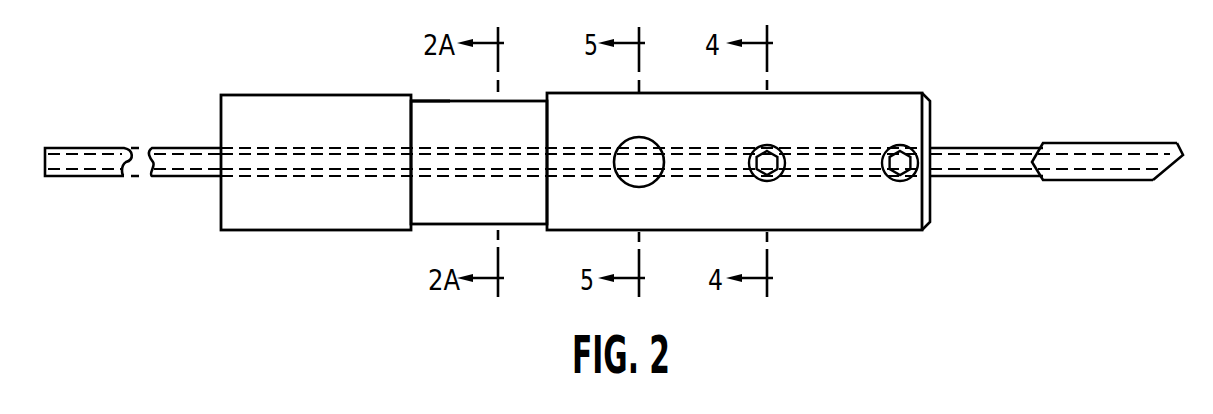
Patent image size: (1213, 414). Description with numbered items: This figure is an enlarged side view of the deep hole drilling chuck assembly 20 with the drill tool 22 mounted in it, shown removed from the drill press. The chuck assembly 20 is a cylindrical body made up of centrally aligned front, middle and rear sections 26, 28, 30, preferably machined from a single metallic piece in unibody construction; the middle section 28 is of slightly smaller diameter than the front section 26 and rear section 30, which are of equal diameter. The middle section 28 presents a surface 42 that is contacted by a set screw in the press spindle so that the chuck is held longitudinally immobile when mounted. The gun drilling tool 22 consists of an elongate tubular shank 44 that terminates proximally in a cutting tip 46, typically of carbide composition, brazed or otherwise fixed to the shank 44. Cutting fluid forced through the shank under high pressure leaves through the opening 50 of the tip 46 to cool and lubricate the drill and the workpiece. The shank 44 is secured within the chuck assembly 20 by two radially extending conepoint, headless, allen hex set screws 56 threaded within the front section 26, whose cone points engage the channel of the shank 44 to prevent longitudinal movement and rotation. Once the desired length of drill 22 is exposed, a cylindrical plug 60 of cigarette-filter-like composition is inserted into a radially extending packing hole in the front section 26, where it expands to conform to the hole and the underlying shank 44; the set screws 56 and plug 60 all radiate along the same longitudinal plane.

The deep hole drilling chuck assembly 20 is at (880, 93).
The drill tool 22 is at (985, 177).
The front section 26 is at (815, 218).
The middle section 28 is at (457, 212).
The rear section 30 is at (325, 212).
The surface 42 is at (435, 100).
The shank 44 is at (988, 158).
The cutting tip 46 is at (1148, 143).
The opening 50 is at (1170, 167).
The set screws 56 is at (910, 139).
The plug 60 is at (620, 139).